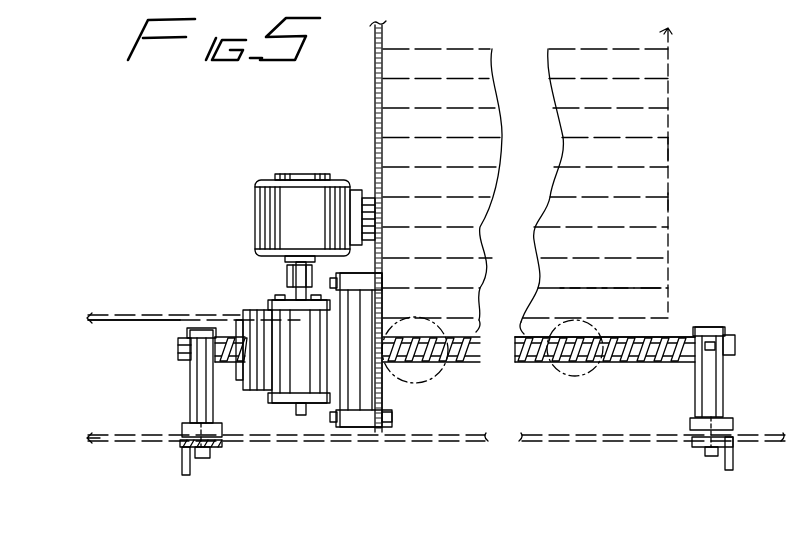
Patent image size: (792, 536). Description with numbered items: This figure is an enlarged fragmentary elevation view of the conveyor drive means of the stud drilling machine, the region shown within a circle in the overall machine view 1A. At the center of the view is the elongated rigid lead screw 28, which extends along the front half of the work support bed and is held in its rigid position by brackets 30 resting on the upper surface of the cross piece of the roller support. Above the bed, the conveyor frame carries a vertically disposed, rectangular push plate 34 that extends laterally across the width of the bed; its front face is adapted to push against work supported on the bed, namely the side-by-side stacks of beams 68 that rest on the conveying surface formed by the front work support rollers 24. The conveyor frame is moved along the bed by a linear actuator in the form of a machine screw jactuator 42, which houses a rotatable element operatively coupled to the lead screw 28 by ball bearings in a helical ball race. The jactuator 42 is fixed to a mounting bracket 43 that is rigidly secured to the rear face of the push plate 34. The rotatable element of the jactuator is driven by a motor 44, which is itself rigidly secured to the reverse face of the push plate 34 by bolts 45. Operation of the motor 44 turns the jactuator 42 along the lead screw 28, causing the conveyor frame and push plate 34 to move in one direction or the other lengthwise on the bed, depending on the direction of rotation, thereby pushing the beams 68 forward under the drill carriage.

The conveyor frame line 1A is at (142, 332).
The front work support rollers 24 is at (562, 372).
The lead screw 28 is at (640, 337).
The brackets 30 is at (192, 388).
The push plate 34 is at (374, 135).
The machine screw jactuator 42 is at (297, 377).
The mounting bracket 43 is at (383, 304).
The motor 44 is at (312, 227).
The bolts 45 is at (370, 195).
The beams 68 is at (658, 193).